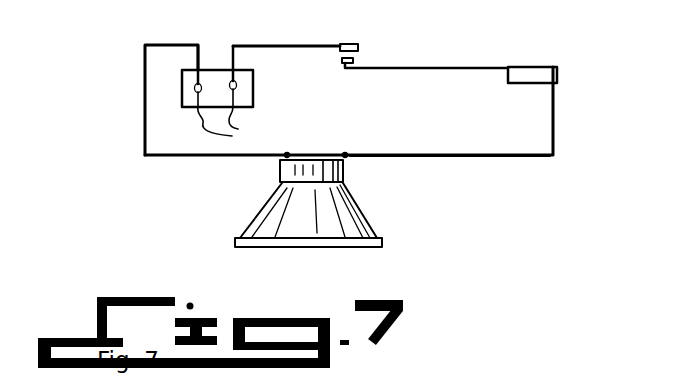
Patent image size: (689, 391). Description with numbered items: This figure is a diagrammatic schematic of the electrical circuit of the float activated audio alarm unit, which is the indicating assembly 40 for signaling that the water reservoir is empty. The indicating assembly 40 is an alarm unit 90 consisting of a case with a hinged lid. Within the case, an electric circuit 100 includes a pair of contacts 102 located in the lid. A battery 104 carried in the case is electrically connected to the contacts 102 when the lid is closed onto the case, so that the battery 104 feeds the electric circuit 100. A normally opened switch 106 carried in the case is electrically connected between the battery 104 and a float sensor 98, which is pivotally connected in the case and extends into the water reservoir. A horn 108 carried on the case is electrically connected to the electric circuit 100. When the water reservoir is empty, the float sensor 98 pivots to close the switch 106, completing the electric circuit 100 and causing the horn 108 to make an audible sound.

The indicating assembly 40 is at (144, 115).
The alarm unit 90 is at (513, 155).
The float sensor 98 is at (527, 79).
The electric circuit 100 is at (395, 155).
The contacts 102 is at (245, 118).
The battery 104 is at (253, 88).
The normally opened switch 106 is at (352, 44).
The horn 108 is at (272, 216).